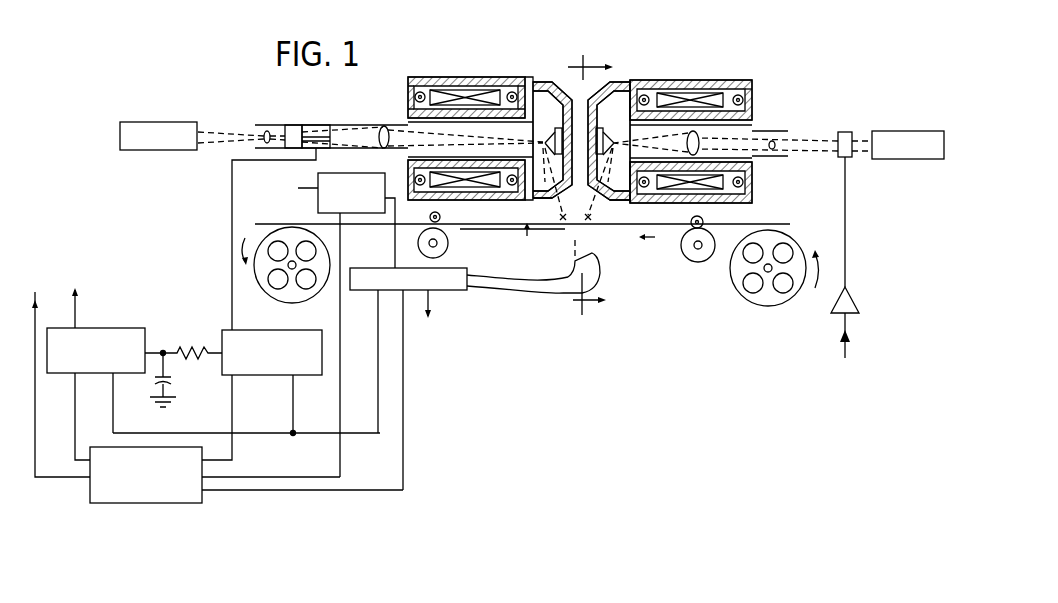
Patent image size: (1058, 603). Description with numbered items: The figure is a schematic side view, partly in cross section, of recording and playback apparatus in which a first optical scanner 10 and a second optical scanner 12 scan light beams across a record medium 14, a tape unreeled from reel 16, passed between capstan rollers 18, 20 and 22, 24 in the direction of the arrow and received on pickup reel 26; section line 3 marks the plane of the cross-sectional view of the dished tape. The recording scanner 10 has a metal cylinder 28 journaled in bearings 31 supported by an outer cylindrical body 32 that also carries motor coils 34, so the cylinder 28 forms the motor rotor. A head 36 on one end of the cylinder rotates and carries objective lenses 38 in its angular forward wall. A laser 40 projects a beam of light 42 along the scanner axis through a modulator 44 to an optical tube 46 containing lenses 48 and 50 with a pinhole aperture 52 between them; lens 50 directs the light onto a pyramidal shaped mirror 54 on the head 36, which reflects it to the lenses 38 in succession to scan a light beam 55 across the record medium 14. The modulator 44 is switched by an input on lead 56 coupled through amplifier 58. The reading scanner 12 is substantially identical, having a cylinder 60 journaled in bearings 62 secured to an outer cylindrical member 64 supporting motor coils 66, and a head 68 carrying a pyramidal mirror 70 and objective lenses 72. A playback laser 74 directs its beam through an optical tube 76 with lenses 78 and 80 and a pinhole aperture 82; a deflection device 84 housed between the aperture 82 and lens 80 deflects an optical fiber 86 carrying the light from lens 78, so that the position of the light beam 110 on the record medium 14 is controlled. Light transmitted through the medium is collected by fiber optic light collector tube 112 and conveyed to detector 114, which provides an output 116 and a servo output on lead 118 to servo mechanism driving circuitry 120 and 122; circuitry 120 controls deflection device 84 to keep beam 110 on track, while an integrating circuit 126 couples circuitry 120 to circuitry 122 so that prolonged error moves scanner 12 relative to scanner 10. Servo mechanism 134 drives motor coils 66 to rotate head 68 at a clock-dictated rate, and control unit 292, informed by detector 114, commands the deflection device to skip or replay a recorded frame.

The section line 3- 3 is at (592, 186).
The first optical scanner 10 is at (672, 75).
The second optical scanner 12 is at (518, 72).
The record medium 14 is at (522, 243).
The reel 16 is at (785, 248).
The capstan roller 18 is at (711, 262).
The capstan roller 20 is at (704, 222).
The capstan roller 22 is at (448, 247).
The capstan roller 24 is at (441, 217).
The pickup reel 26 is at (273, 241).
The metal cylinder 28 is at (745, 131).
The bearings 31 is at (756, 96).
The outer cylindrical body 32 is at (745, 80).
The motor coils 34 is at (730, 203).
The head 36 is at (632, 201).
The objective lenses 38 is at (601, 92).
The laser 40 is at (878, 131).
The beam of light 42 is at (841, 131).
The modulator 44 is at (848, 158).
The optical tube 46 is at (778, 146).
The lens 48 is at (769, 177).
The lens 50 is at (756, 140).
The pinhole aperture 52 is at (757, 160).
The pyramidal shaped mirror 54 is at (612, 141).
The light beam 55 is at (596, 237).
The lead 56 is at (850, 335).
The amplifier 58 is at (855, 297).
The cylinder 60 is at (407, 119).
The bearings 62 is at (407, 93).
The outer cylindrical member 64 is at (467, 78).
The motor coils 66 is at (498, 196).
The head 68 is at (546, 199).
The pyramidal mirror 70 is at (546, 142).
The objective lenses 72 is at (553, 92).
The playback laser 74 is at (141, 121).
The optical tube 76 is at (363, 123).
The lens 78 is at (262, 133).
The lens 80 is at (388, 147).
The pinhole aperture 82 is at (283, 125).
The deflection device 84 is at (316, 124).
The optical fiber 86 is at (322, 144).
The light beam 110 is at (558, 202).
The fiber optic light collector tube 112 is at (563, 296).
The detector 114 is at (448, 291).
The output 116 is at (413, 330).
The lead 118 is at (378, 396).
The servo mechanism driving circuitry 120 is at (287, 330).
The servo mechanism driving circuitry 122 is at (122, 328).
The integrating circuit 126 is at (178, 345).
The servo mechanism 134 is at (313, 312).
The control unit 292 is at (132, 505).